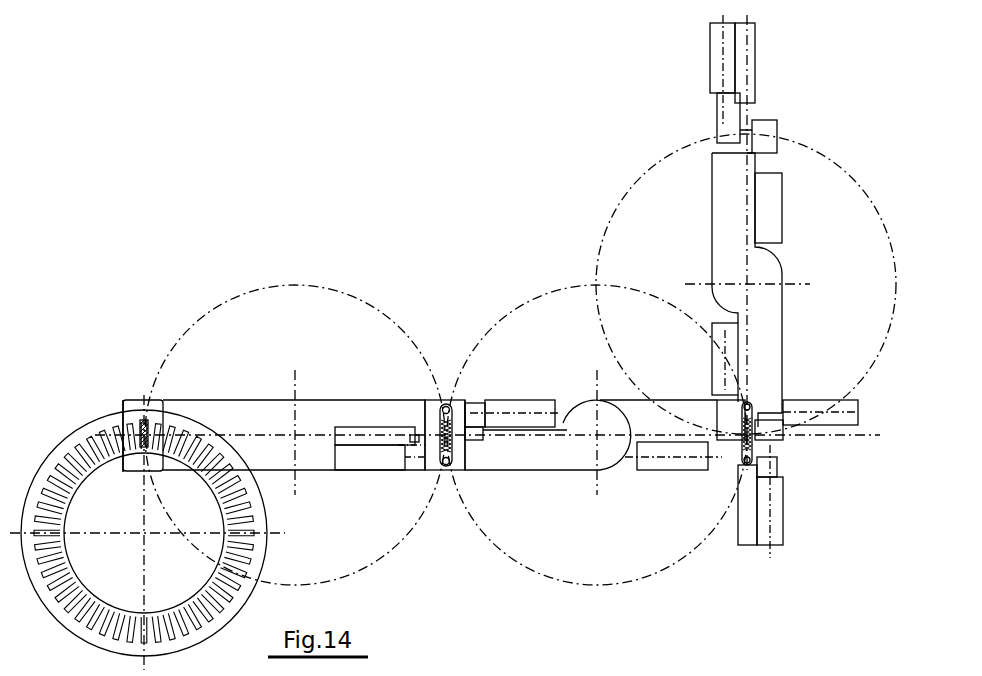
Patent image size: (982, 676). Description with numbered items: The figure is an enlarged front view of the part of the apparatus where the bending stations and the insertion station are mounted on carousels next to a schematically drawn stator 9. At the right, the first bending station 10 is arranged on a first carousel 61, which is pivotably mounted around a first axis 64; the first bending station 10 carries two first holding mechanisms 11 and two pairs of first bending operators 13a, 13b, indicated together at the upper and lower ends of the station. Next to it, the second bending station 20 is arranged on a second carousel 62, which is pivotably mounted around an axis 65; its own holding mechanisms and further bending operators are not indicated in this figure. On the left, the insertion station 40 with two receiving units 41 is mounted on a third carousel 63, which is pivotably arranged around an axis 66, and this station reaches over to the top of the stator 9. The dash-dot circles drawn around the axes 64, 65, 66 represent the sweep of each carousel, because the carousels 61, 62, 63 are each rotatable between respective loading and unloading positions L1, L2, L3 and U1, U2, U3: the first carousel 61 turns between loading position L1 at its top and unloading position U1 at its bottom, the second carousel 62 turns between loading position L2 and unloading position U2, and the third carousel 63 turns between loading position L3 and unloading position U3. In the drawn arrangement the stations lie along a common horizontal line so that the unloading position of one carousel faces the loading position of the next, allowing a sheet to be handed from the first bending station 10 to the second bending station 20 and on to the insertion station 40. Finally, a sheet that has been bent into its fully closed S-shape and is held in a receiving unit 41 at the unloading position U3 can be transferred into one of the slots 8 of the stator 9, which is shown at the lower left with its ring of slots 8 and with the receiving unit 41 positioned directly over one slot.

The slots 8 is at (142, 422).
The stator 9 is at (50, 470).
The first bending station 10 is at (845, 335).
The first holding mechanisms 11 is at (831, 274).
The first bending operators 13a is at (831, 274).
The first bending operators 13b is at (783, 119).
The second bending station 20 is at (578, 458).
The insertion station 40 is at (295, 435).
The receiving units 41 is at (130, 400).
The first carousel 61 is at (757, 268).
The second carousel 62 is at (610, 405).
The third carousel 63 is at (250, 425).
The first axis 64 is at (747, 283).
The axis 65 is at (590, 433).
The axis 66 is at (300, 433).
The loading position L1 is at (752, 45).
The loading position L2 is at (745, 440).
The loading position L3 is at (437, 403).
The unloading position U1 is at (765, 445).
The unloading position U2 is at (462, 470).
The unloading position U3 is at (123, 400).